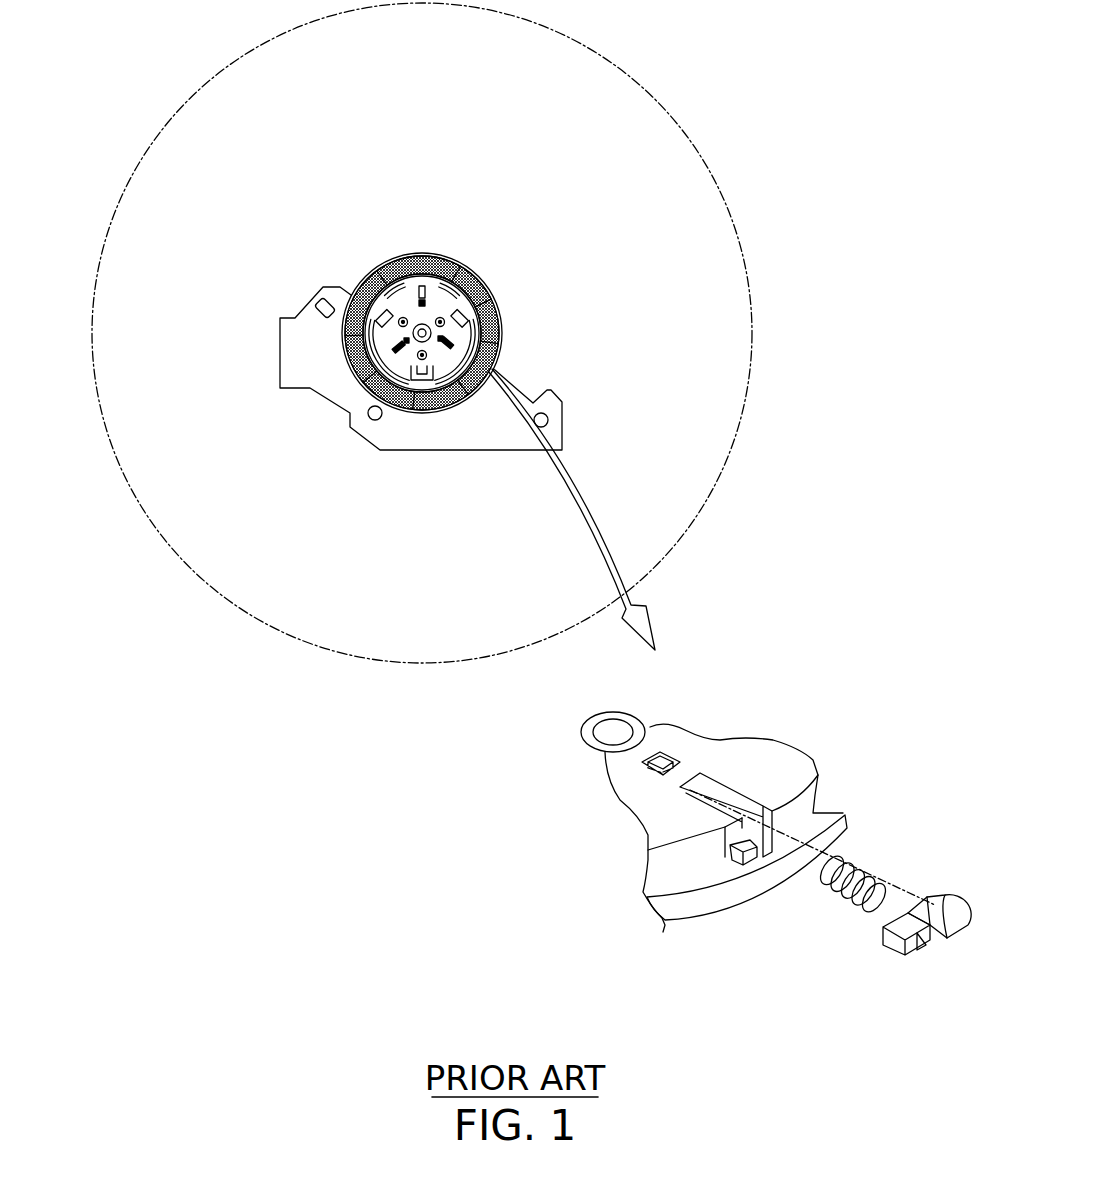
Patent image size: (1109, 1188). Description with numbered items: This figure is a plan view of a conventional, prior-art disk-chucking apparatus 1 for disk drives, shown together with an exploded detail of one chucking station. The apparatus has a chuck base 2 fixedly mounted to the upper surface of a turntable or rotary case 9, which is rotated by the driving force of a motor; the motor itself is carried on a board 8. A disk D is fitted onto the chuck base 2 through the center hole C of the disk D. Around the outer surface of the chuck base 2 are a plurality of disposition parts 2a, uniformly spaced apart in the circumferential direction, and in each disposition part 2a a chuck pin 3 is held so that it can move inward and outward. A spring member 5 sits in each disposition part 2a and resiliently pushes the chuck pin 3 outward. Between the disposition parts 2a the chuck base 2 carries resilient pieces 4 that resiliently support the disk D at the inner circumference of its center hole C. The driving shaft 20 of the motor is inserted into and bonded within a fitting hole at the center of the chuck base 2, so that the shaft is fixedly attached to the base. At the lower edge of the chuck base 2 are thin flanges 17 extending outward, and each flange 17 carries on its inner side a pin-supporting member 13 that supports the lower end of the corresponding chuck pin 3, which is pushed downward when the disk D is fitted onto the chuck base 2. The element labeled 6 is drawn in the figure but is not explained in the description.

The disk-chucking apparatus 1 is at (736, 149).
The chuck base 2 is at (478, 330).
The disposition part 2a is at (722, 788).
The chuck pin 3 is at (461, 340).
The resilient piece 4 is at (468, 305).
The spring member 5 is at (424, 382).
The plate member 6 is at (444, 277).
The board 8 is at (503, 440).
The rotary case 9 is at (366, 283).
The pin-supporting member 13 is at (746, 862).
The flange 17 is at (683, 907).
The driving shaft 20 is at (421, 328).
The center hole C is at (416, 396).
The disk D is at (748, 340).